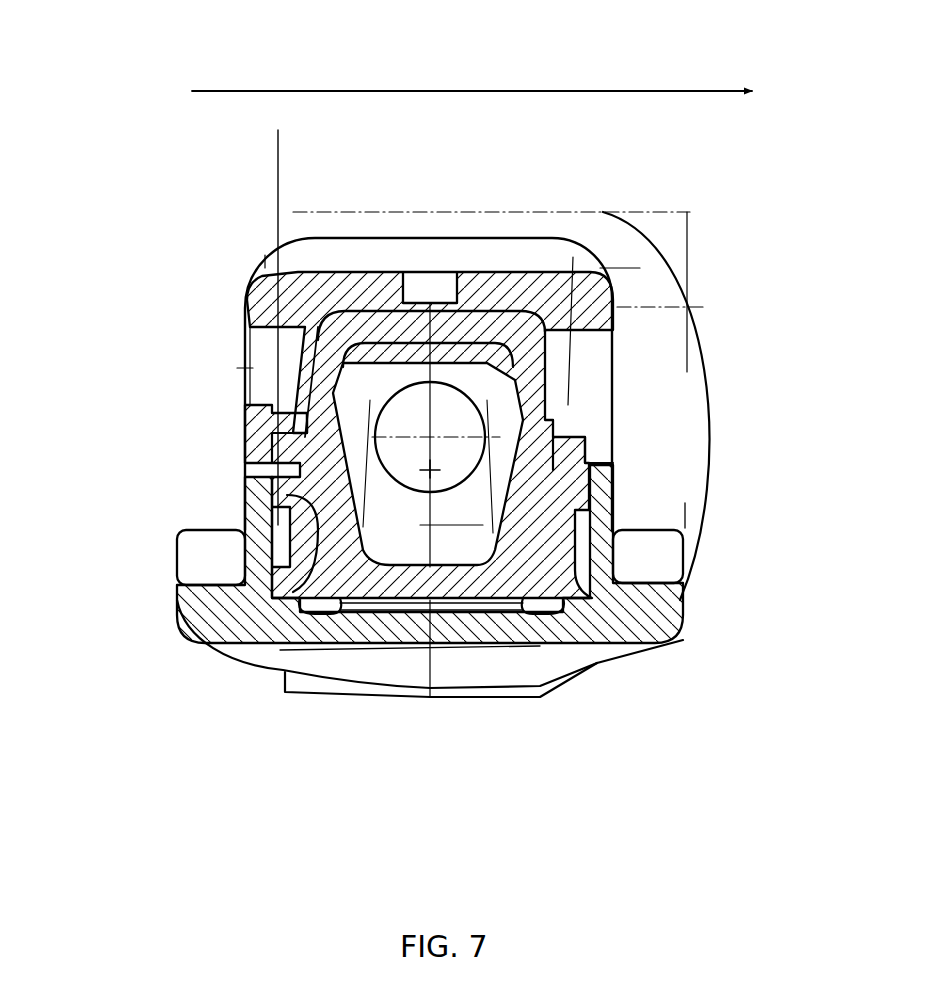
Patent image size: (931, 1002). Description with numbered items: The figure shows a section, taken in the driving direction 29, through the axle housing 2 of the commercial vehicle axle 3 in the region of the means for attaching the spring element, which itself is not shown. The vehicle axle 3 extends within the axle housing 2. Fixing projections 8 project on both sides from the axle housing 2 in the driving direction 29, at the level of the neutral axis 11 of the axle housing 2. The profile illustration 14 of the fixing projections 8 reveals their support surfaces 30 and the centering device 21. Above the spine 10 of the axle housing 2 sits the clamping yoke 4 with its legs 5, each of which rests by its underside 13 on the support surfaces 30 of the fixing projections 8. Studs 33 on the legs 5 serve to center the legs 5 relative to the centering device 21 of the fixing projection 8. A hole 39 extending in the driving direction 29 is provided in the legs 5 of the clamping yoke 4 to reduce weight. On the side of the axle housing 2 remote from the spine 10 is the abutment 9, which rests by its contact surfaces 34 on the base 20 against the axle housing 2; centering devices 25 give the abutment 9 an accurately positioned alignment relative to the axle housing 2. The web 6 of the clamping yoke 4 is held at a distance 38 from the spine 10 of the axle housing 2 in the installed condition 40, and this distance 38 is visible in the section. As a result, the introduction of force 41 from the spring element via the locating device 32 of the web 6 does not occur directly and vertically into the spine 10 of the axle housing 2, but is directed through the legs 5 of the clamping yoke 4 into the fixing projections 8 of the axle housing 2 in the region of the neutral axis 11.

The axle housing 2 is at (429, 464).
The commercial vehicle axle 3 is at (506, 261).
The clamping yoke 4 is at (428, 326).
The legs 5 is at (606, 345).
The web 6 is at (342, 264).
The fixing projections 8 is at (402, 620).
The abutment 9 is at (365, 666).
The spine 10 is at (386, 293).
The neutral axis 11 is at (282, 472).
The underside 13 is at (430, 403).
The profile illustration 14 is at (305, 500).
The base 20 is at (236, 550).
The centering device 21 is at (568, 410).
The centering devices 25 is at (451, 554).
The driving direction 29 is at (438, 88).
The support surfaces 30 is at (260, 450).
The locating device 32 is at (440, 268).
The studs 33 is at (430, 403).
The rolled edge 34 is at (451, 554).
The distance 38 is at (530, 300).
The hole 39 is at (268, 341).
The installed condition 40 is at (468, 700).
The introduction of force 41 is at (276, 176).